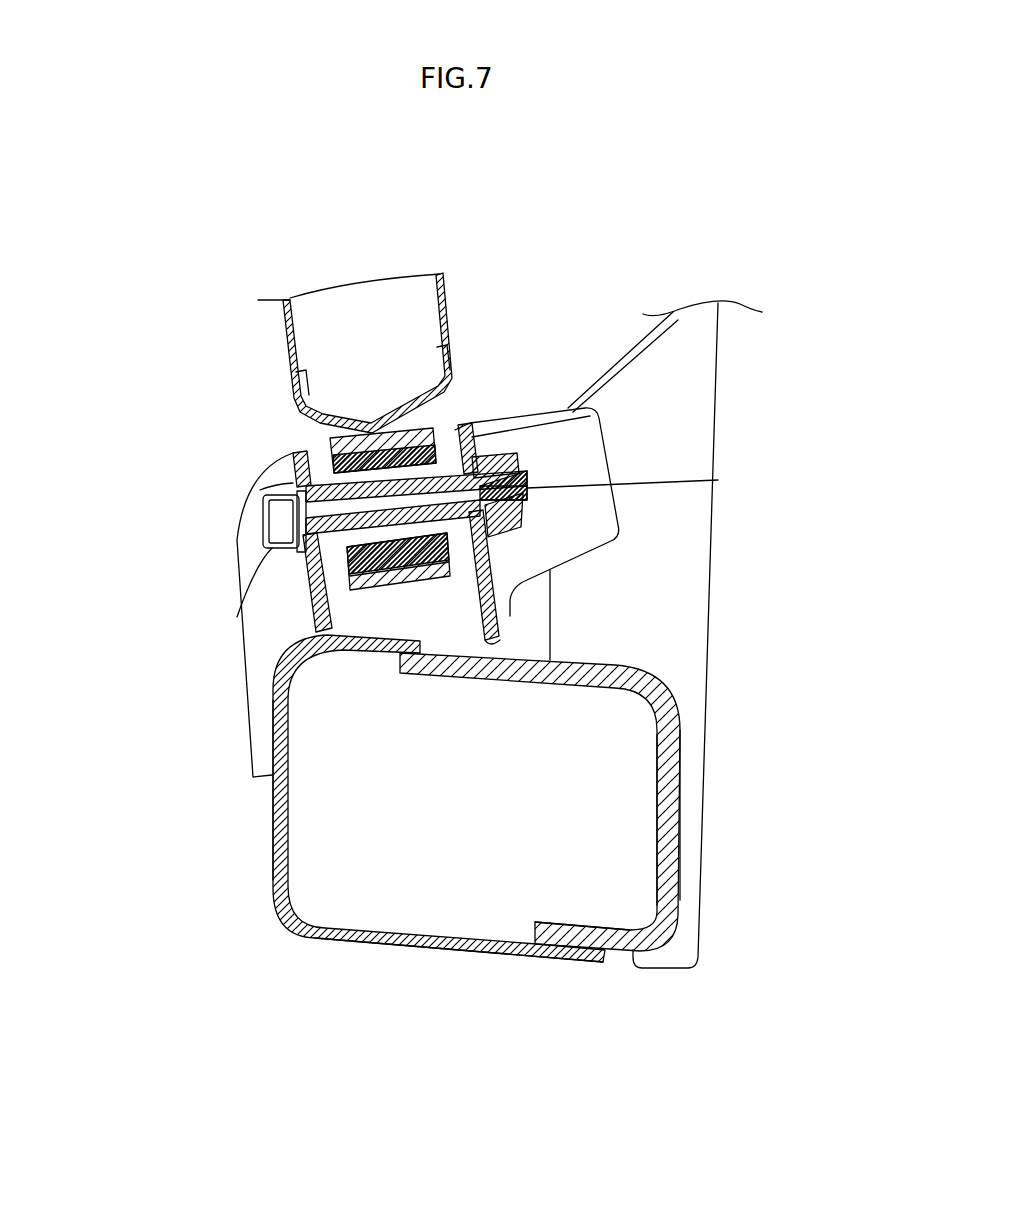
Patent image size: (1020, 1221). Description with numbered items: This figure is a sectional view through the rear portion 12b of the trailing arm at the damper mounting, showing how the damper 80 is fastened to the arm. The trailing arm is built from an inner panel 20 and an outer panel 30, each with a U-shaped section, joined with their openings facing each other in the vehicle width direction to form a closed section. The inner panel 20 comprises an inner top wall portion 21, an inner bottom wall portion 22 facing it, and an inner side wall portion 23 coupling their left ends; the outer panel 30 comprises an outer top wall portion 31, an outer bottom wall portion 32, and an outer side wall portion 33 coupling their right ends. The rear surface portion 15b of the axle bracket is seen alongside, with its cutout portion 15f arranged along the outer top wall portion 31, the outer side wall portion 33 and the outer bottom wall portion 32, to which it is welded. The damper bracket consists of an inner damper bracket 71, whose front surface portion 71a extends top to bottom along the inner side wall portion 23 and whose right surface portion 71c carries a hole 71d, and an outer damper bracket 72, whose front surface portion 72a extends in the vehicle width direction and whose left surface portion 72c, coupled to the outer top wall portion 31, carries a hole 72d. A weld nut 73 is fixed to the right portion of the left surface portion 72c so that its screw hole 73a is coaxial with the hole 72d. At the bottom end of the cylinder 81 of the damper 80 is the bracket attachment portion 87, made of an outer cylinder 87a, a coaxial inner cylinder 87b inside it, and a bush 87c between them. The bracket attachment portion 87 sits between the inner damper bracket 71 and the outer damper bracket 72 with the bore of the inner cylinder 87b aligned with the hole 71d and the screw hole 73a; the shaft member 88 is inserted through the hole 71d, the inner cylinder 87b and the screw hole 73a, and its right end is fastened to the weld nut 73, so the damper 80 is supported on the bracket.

The rear portion 12b is at (680, 683).
The rear surface portion 15b is at (660, 410).
The cutout portion 15f is at (600, 670).
The inner panel 20 is at (366, 845).
The inner top wall portion 21 is at (350, 650).
The inner bottom wall portion 22 is at (427, 950).
The inner side wall portion 23 is at (275, 848).
The outer panel 30 is at (614, 854).
The outer top wall portion 31 is at (563, 680).
The outer bottom wall portion 32 is at (630, 943).
The outer side wall portion 33 is at (670, 857).
The inner damper bracket 71 is at (190, 611).
The front surface portion 71a is at (252, 657).
The right surface portion 71c is at (290, 455).
The hole 71d is at (272, 548).
The outer damper bracket 72 is at (663, 465).
The front surface portion 72a is at (540, 423).
The left surface portion 72c is at (510, 618).
The hole 72d is at (718, 480).
The weld nut 73 is at (488, 467).
The screw hole 73a is at (507, 520).
The damper 80 is at (324, 430).
The cylinder 81 is at (447, 305).
The bracket attachment portion 87 is at (347, 484).
The outer cylinder 87a is at (400, 437).
The inner cylinder 87b is at (363, 583).
The bush 87c is at (427, 577).
The shaft member 88 is at (343, 503).